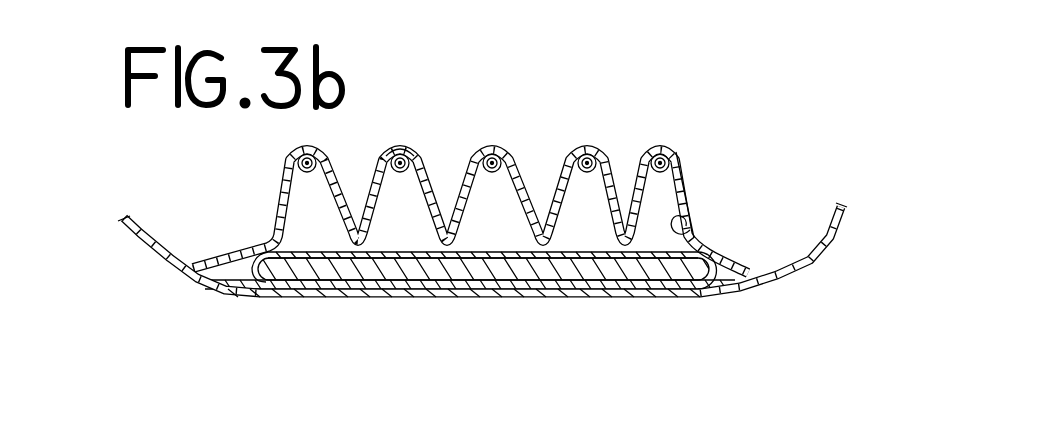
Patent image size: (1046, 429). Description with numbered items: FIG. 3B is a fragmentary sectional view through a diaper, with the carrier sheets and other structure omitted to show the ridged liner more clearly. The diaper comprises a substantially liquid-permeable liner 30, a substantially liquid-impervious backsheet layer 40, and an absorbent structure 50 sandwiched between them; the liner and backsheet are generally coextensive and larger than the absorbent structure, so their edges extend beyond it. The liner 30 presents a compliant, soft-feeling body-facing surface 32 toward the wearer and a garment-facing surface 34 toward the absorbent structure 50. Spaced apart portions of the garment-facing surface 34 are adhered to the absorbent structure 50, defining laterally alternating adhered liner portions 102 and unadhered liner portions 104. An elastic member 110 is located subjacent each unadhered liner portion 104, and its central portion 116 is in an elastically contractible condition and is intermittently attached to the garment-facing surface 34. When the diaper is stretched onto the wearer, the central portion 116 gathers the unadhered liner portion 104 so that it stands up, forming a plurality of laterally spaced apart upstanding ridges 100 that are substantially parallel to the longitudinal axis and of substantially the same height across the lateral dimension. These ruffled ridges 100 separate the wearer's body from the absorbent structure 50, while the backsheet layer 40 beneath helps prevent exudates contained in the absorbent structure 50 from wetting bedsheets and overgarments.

The upstanding ridge 100 is at (528, 213).
The adhered liner portion 102 is at (373, 242).
The unadhered liner portion 104 is at (398, 143).
The elastic member 110 is at (290, 175).
The central portion 116 is at (593, 148).
The liner 30 is at (695, 208).
The body-facing surface 32 is at (683, 175).
The garment-facing surface 34 is at (692, 228).
The backsheet layer 40 is at (845, 231).
The absorbent structure 50 is at (614, 264).